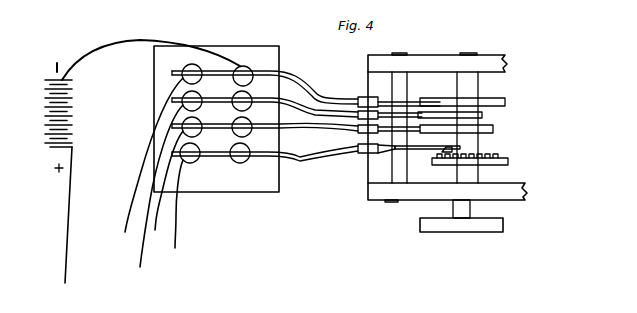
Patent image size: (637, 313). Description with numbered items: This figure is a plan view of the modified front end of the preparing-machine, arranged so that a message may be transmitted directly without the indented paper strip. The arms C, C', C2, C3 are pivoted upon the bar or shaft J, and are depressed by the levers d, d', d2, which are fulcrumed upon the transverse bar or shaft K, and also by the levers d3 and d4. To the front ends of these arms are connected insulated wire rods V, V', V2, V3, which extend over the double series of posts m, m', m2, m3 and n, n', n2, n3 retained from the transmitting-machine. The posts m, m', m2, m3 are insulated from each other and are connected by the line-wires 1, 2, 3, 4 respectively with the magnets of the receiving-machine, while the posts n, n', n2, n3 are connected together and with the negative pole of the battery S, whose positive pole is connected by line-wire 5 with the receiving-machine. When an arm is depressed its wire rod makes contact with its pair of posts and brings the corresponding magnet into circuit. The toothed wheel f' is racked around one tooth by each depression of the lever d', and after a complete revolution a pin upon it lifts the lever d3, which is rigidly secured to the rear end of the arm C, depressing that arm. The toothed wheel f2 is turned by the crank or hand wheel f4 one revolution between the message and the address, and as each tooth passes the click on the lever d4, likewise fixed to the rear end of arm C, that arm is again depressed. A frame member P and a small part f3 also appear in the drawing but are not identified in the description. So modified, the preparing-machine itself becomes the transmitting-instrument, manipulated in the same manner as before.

The battery S is at (46, 117).
The line-wire 5 is at (72, 215).
The line-wire 1 is at (180, 210).
The line-wire 2 is at (169, 190).
The line-wire 3 is at (161, 190).
The line-wire 4 is at (149, 166).
The post m is at (195, 156).
The post m' is at (199, 123).
The post m2 is at (201, 97).
The post m3 is at (201, 69).
The post n is at (244, 151).
The post n' is at (247, 123).
The post n2 is at (249, 97).
The post n3 is at (251, 71).
The insulated wire rod V is at (265, 159).
The insulated wire rod V' is at (265, 134).
The insulated wire rod V2 is at (265, 106).
The insulated wire rod V3 is at (265, 87).
The arm C is at (376, 157).
The arm C' is at (382, 132).
The arm C2 is at (380, 109).
The arm C3 is at (399, 94).
The frame plate P is at (447, 127).
The transverse bar or shaft K is at (459, 127).
The bar or shaft J is at (398, 127).
The lever d is at (462, 95).
The lever d' is at (466, 129).
The lever d2 is at (464, 113).
The lever d3 is at (427, 140).
The lever d4 is at (416, 165).
The toothed wheel f' is at (472, 155).
The toothed wheel f2 is at (506, 175).
The pawl f3 is at (453, 141).
The crank or hand wheel f4 is at (470, 220).